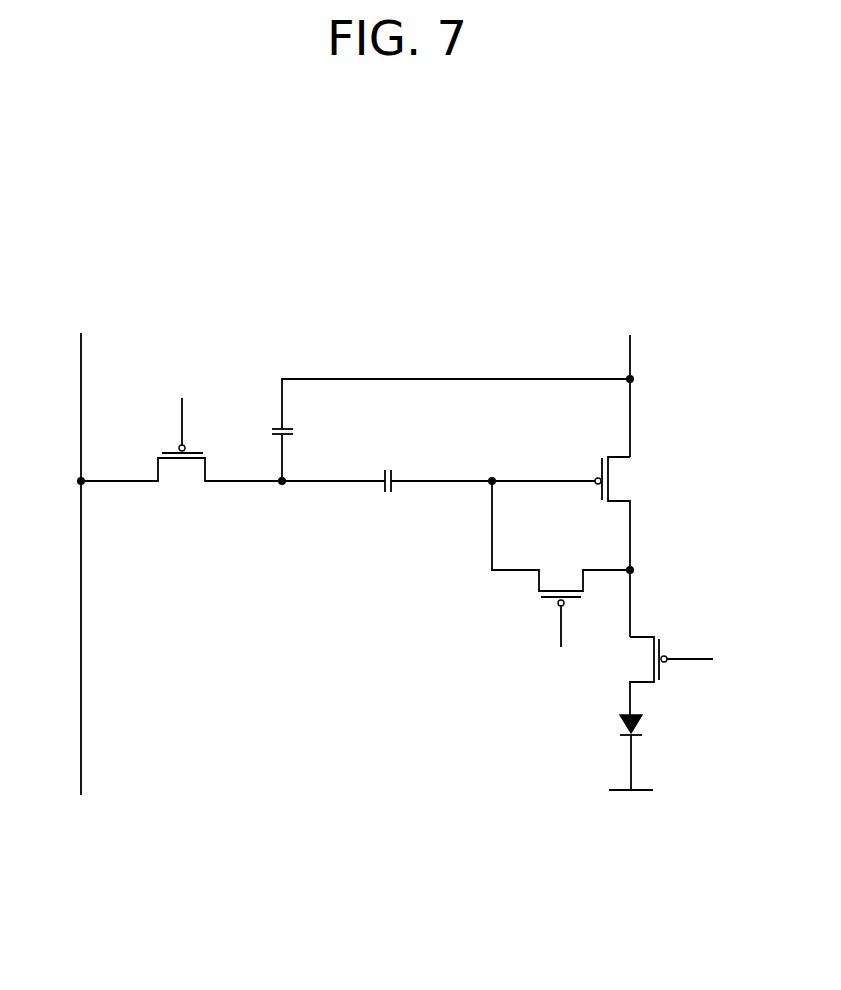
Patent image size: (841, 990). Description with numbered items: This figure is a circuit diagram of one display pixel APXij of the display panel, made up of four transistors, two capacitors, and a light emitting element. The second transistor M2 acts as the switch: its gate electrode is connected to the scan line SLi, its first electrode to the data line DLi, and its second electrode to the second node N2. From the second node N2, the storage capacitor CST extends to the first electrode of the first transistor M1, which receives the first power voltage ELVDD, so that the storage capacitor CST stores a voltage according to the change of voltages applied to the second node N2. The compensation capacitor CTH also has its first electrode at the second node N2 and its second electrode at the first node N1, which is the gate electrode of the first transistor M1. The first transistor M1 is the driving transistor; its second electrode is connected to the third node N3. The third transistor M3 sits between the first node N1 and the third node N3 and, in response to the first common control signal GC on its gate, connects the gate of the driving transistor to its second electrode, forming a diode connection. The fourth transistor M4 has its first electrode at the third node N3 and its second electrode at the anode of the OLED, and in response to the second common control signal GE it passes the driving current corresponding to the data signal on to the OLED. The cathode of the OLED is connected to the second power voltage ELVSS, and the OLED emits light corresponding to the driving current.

The display pixel APXij is at (433, 283).
The data line DLi is at (78, 549).
The scan line SLi is at (178, 408).
The second transistor M2 is at (181, 470).
The second node N2 is at (285, 496).
The storage capacitor CST is at (451, 430).
The compensation capacitor CTH is at (387, 465).
The first node N1 is at (492, 462).
The first power voltage ELVDD is at (631, 381).
The first transistor M1 is at (567, 547).
The third node N3 is at (647, 570).
The third transistor M3 is at (561, 543).
The first common control signal GC is at (563, 643).
The fourth transistor M4 is at (641, 676).
The second common control signal GE is at (707, 660).
The element OLED is at (660, 750).
The second power voltage ELVSS is at (631, 808).